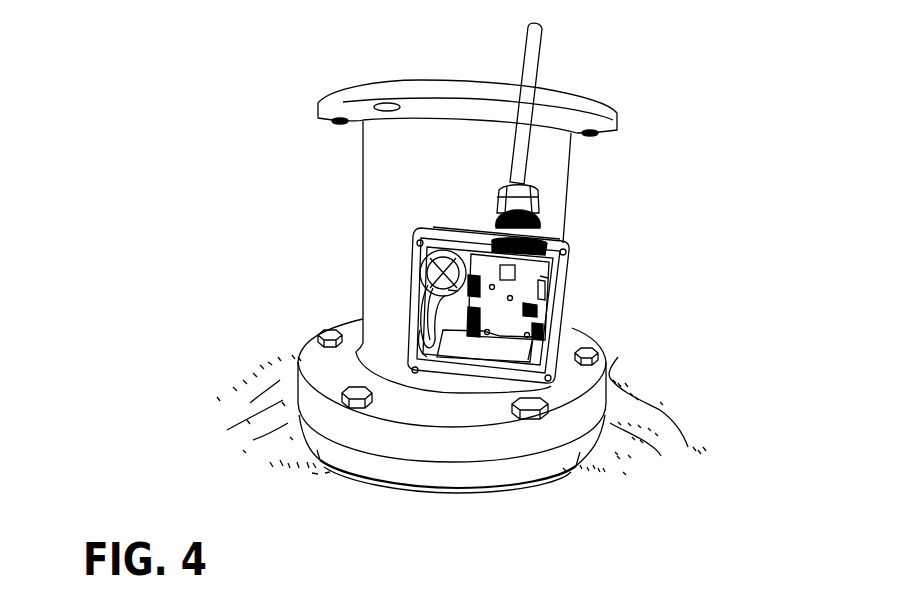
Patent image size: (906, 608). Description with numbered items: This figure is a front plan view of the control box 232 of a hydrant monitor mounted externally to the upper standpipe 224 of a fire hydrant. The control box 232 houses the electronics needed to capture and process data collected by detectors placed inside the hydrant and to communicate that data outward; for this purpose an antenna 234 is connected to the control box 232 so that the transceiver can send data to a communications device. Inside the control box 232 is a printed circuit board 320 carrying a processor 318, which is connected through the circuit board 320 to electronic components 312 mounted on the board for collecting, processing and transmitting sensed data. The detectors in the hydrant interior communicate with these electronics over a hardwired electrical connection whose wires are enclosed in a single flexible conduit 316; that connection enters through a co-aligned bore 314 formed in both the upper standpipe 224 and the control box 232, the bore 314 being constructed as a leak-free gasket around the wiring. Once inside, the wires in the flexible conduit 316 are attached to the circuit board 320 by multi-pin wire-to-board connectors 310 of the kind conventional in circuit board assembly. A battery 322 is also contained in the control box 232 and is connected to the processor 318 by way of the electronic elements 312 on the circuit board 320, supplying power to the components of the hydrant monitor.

The upper standpipe 224 is at (570, 178).
The antenna 234 is at (533, 62).
The control box 232 is at (570, 298).
The processor 318 is at (567, 276).
The printed circuit board 320 is at (563, 313).
The bore 314 is at (417, 270).
The flexible conduit 316 is at (415, 313).
The battery 322 is at (458, 284).
The multi-pin wire-to-board connectors 310 is at (452, 290).
The electronic components 312 is at (544, 278).